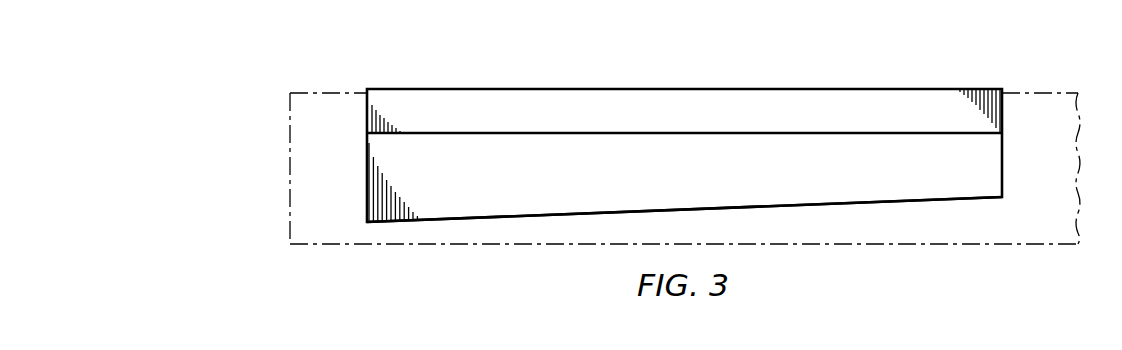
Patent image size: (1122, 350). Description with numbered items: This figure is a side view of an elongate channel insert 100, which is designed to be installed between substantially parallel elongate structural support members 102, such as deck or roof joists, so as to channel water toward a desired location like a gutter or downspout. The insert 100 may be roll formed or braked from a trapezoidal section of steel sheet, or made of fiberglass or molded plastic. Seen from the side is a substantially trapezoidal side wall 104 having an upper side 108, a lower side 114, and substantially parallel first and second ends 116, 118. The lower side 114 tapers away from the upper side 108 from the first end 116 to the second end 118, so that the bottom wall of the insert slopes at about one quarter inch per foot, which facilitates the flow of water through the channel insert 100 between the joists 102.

The channel insert 100 is at (551, 51).
The structural support member 102 is at (290, 165).
The first side wall 104 is at (557, 192).
The upper side 108 is at (665, 89).
The lower side 114 is at (690, 202).
The first end 116 is at (367, 156).
The second end 118 is at (1002, 156).